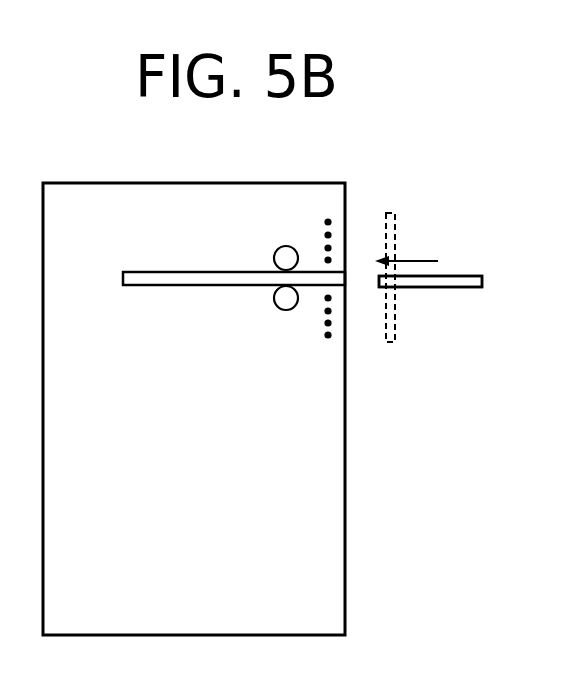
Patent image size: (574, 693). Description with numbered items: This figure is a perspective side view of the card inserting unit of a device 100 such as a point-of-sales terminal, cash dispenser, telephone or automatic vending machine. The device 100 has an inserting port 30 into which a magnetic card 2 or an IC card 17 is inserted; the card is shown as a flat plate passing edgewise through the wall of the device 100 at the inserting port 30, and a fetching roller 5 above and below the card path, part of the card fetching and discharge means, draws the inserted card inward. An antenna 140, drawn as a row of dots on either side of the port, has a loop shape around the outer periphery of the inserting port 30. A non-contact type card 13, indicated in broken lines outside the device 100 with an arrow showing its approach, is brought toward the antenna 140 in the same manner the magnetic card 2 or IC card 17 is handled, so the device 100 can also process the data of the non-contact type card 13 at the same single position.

The device 100 is at (345, 497).
The inserting port 30 is at (346, 279).
The fetching roller 5 is at (277, 251).
The antenna 140 is at (331, 222).
The non-contact type card 13 is at (397, 224).
The magnetic card 2 is at (431, 288).
The IC card 17 is at (430, 281).